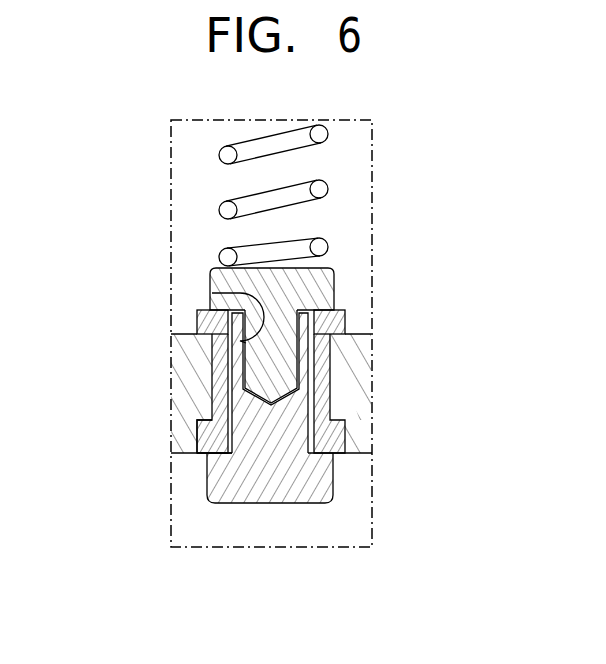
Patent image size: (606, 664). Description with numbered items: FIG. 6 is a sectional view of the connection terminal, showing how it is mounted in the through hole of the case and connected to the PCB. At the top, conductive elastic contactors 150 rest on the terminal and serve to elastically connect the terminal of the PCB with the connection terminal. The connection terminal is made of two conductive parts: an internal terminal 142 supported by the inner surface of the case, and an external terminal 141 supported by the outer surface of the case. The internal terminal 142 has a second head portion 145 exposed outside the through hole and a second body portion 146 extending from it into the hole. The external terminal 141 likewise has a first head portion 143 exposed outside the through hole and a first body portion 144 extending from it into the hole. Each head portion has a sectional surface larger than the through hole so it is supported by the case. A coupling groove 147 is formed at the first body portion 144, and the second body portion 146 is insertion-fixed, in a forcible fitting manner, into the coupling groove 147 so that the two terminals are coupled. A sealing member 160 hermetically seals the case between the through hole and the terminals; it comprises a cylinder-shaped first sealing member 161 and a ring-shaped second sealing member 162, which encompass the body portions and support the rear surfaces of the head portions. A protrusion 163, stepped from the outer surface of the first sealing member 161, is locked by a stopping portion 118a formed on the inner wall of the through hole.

The elastic contactor 150 is at (323, 189).
The internal terminal 142 is at (467, 268).
The second head portion 145 is at (323, 290).
The second body portion 146 is at (288, 368).
The coupling groove 147 is at (212, 293).
The sealing member 160 is at (79, 312).
The second sealing member 162 is at (208, 322).
The first sealing member 161 is at (218, 378).
The stopping portion 118a is at (200, 430).
The protrusion 163 is at (205, 442).
The external terminal 141 is at (467, 415).
The first body portion 144 is at (290, 432).
The first head portion 143 is at (312, 483).